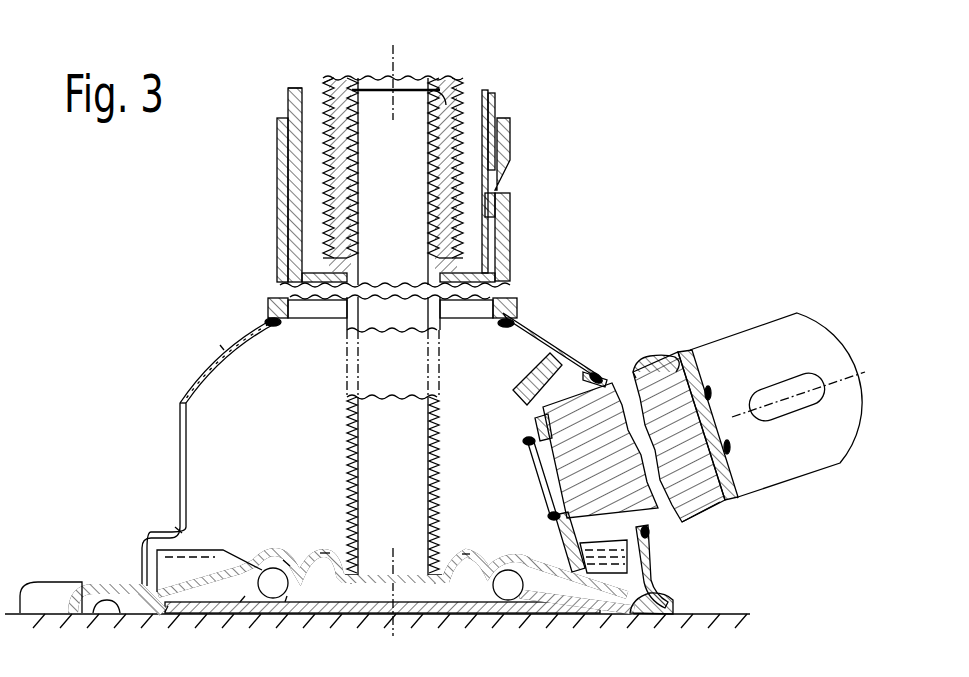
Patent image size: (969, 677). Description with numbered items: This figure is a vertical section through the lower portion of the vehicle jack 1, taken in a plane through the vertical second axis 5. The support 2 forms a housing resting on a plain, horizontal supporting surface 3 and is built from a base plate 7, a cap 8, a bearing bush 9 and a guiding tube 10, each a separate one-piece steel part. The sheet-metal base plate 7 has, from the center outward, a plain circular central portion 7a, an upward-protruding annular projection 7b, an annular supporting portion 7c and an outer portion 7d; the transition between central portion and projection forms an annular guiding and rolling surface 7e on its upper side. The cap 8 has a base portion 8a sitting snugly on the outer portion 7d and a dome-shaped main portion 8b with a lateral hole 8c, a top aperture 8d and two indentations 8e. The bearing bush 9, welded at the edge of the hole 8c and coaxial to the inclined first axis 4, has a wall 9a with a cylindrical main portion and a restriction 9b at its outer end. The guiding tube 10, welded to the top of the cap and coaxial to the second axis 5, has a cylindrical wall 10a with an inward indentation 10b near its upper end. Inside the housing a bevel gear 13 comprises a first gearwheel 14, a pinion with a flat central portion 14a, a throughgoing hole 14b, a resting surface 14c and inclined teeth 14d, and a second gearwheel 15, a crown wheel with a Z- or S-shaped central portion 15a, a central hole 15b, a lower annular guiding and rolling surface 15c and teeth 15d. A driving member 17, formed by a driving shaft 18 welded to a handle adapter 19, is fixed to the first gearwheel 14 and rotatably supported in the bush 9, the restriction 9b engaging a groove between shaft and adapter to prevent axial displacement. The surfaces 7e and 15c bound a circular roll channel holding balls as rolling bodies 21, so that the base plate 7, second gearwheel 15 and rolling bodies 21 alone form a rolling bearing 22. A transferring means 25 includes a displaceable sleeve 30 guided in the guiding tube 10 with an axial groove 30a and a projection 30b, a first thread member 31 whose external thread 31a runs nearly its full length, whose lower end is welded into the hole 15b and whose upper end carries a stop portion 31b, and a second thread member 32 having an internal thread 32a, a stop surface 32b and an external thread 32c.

The vehicle jack 1 is at (260, 182).
The support 2 is at (191, 436).
The supporting surface 3 is at (747, 614).
The first axis 4 is at (843, 378).
The second axis 5 is at (398, 66).
The base plate 7 is at (380, 616).
The central portion 7a is at (447, 607).
The annular projection 7b is at (243, 598).
The annular supporting portion 7c is at (167, 618).
The outer portion 7d is at (108, 602).
The annular guiding and rolling surface 7e is at (287, 597).
The cap 8 is at (180, 398).
The base portion 8a is at (124, 584).
The main portion 8b is at (228, 342).
The hole 8c is at (596, 372).
The aperture 8d is at (292, 312).
The indentations 8e is at (174, 523).
The bearing bush 9 is at (672, 404).
The wall 9a is at (634, 366).
The restriction 9b is at (667, 353).
The guiding tube 10 is at (282, 205).
The cylindrical wall 10a is at (510, 250).
The indentation 10b is at (505, 150).
The bevel gear 13 is at (636, 556).
The first gearwheel 14 is at (520, 378).
The central portion 14a is at (528, 438).
The throughgoing hole 14b is at (540, 485).
The resting surface 14c is at (540, 417).
The set of teeth 14d is at (537, 367).
The second gearwheel 15 is at (236, 557).
The central portion 15a is at (455, 556).
The central hole 15b is at (423, 568).
The annular guiding and rolling surface 15c is at (280, 555).
The set of teeth 15d is at (182, 547).
The driving member 17 is at (742, 500).
The driving shaft 18 is at (660, 512).
The handle adapter 19 is at (735, 345).
The rolling bodies 21 is at (300, 600).
The rolling bearing 22 is at (296, 560).
The transferring means 25 is at (290, 92).
The displaceable sleeve 30 is at (300, 103).
The axial groove 30a is at (490, 108).
The projection 30b is at (497, 215).
The first thread member 31 is at (320, 303).
The external thread 31a is at (450, 305).
The stop portion 31b is at (330, 80).
The second thread member 32 is at (345, 100).
The internal thread 32a is at (358, 117).
The stop surface 32b is at (447, 95).
The external thread 32c is at (467, 90).